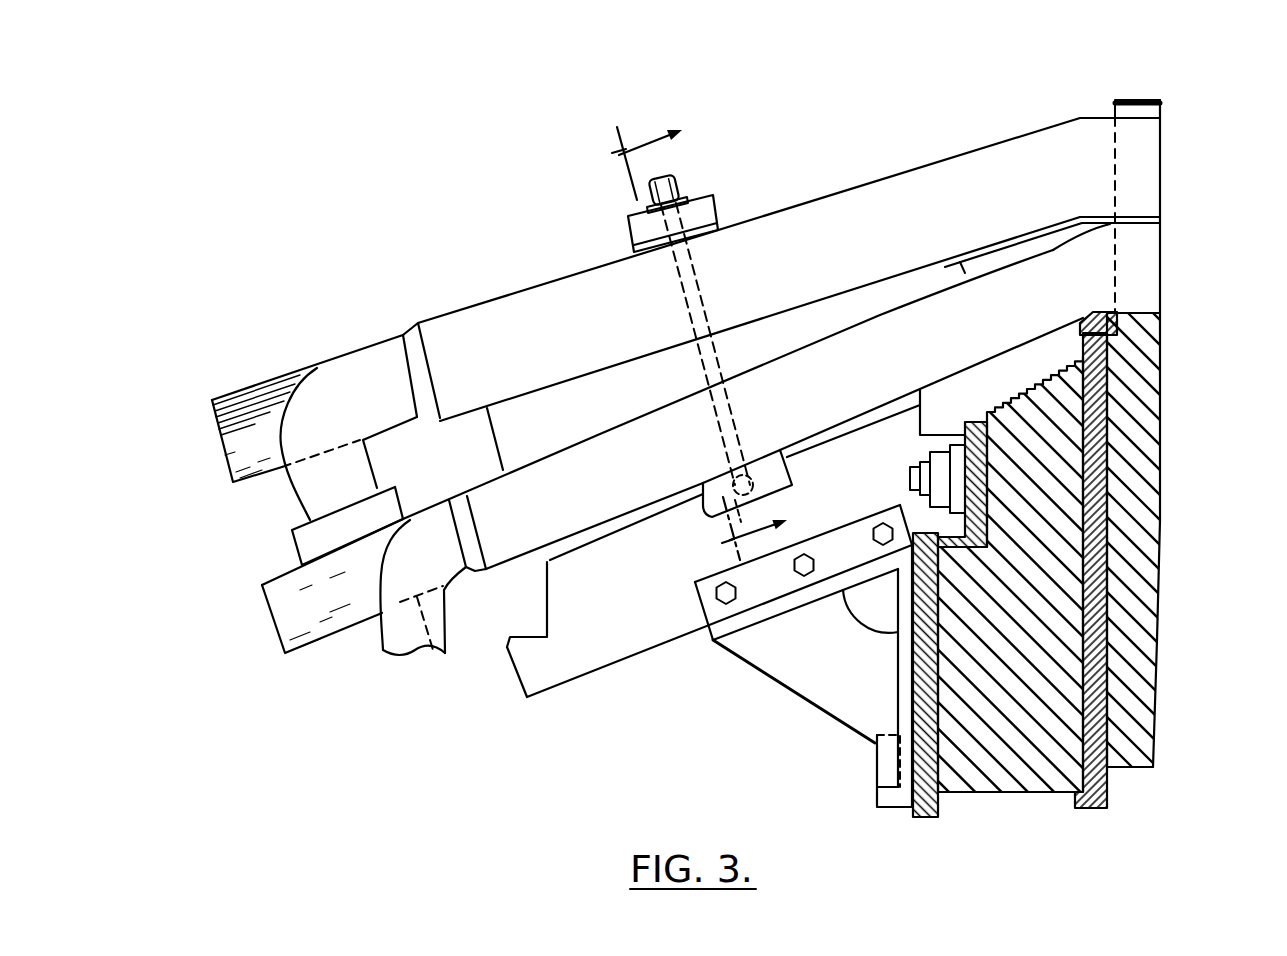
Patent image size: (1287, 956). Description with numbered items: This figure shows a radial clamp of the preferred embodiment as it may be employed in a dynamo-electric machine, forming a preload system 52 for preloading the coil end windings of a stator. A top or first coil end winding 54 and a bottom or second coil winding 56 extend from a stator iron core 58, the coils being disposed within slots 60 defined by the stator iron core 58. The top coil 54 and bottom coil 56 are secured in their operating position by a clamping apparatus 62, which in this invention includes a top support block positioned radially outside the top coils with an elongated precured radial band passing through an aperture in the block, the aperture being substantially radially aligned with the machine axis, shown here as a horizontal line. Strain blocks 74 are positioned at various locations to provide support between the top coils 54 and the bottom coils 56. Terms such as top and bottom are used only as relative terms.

The preload system 52 is at (612, 75).
The top coil end winding 54 is at (852, 237).
The bottom coil winding 56 is at (852, 388).
The stator iron core 58 is at (1007, 797).
The slots 60 is at (1133, 310).
The clamping apparatus 62 is at (703, 195).
The strain blocks 74 is at (893, 297).